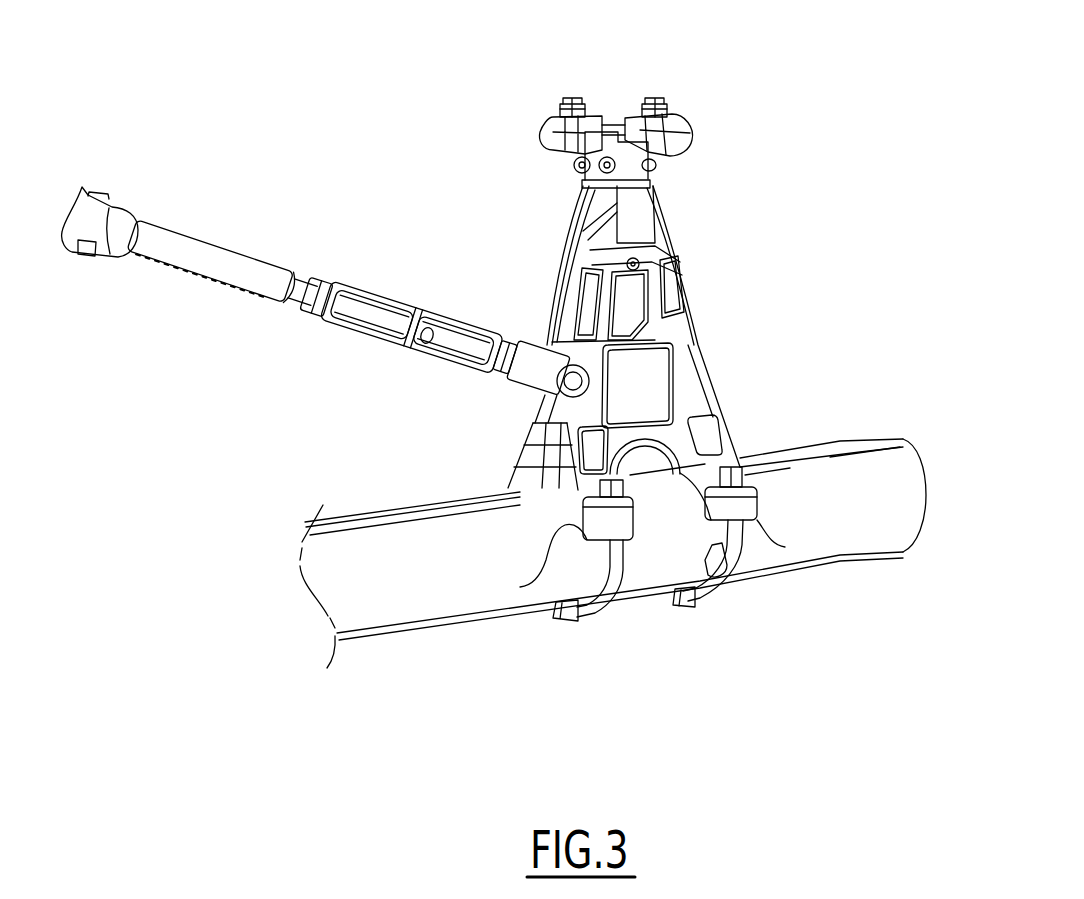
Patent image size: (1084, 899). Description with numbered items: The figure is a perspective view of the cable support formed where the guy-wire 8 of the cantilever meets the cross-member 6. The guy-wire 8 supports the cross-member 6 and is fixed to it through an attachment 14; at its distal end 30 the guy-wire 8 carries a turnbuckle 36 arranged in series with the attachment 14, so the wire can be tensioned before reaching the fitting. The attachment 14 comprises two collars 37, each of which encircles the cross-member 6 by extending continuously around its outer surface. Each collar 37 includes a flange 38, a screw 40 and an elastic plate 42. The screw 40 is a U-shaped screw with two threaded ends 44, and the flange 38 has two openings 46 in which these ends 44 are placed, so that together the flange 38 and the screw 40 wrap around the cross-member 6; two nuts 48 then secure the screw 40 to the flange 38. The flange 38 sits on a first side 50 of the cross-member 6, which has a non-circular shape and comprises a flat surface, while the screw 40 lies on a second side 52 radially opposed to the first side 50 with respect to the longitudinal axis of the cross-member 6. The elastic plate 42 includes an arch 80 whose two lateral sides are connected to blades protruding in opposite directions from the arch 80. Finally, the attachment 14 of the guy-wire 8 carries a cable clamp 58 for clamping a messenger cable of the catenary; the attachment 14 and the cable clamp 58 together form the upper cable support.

The cross-member 6 is at (392, 638).
The guy-wire 8 is at (178, 157).
The attachment 14 is at (720, 688).
The distal end 30 is at (225, 215).
The turnbuckle 36 is at (177, 282).
The collar 37 is at (748, 418).
The flange 38 is at (483, 465).
The screw 40 is at (621, 594).
The elastic plate 42 is at (572, 628).
The threaded end 44 is at (747, 472).
The opening 46 is at (830, 457).
The nut 48 is at (780, 470).
The first side 50 is at (379, 511).
The second side 52 is at (485, 630).
The cable clamp 58 is at (700, 120).
The arch 80 is at (687, 613).